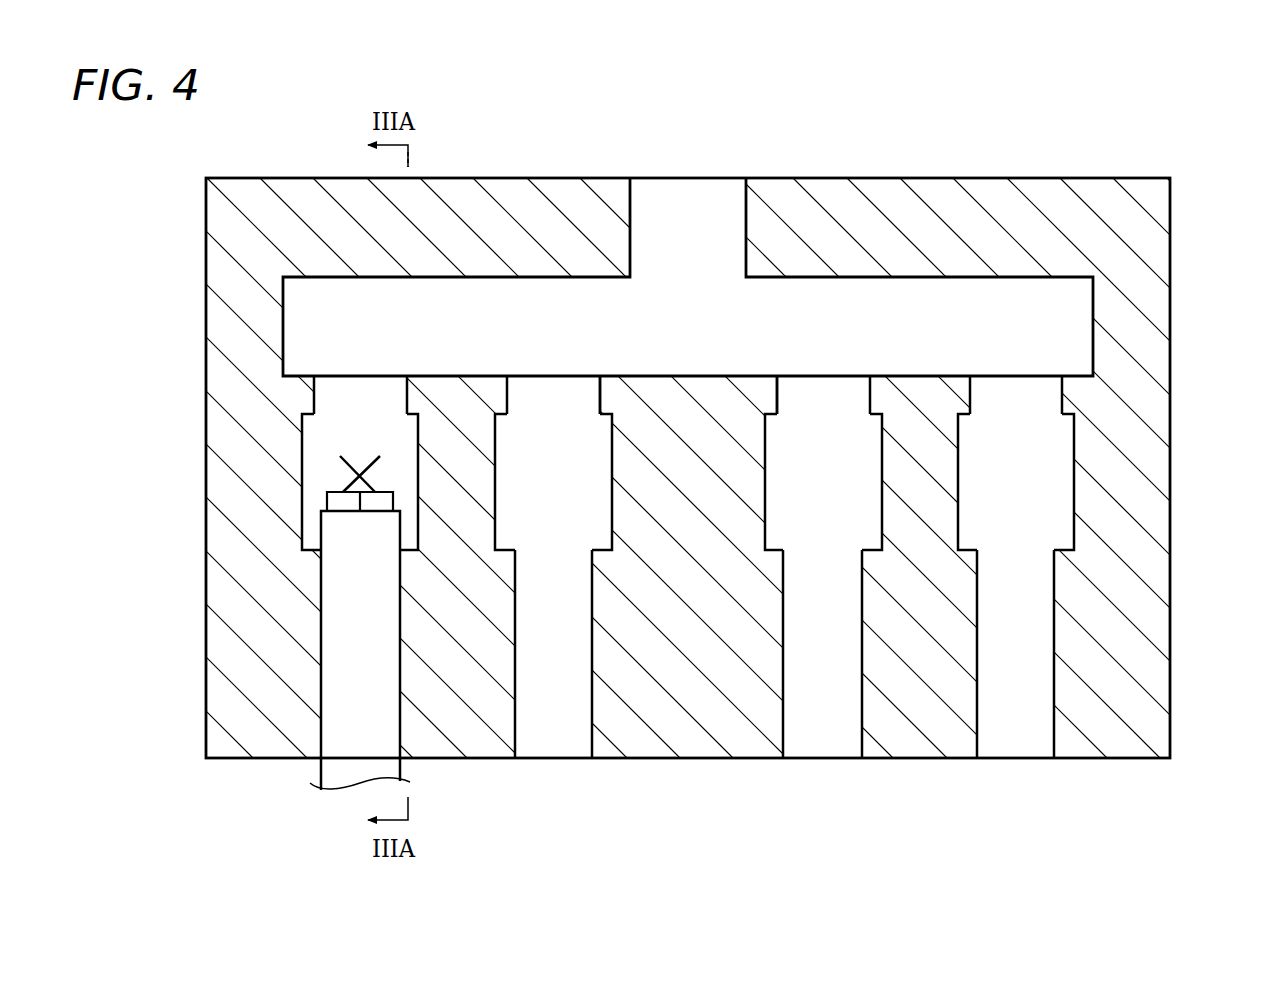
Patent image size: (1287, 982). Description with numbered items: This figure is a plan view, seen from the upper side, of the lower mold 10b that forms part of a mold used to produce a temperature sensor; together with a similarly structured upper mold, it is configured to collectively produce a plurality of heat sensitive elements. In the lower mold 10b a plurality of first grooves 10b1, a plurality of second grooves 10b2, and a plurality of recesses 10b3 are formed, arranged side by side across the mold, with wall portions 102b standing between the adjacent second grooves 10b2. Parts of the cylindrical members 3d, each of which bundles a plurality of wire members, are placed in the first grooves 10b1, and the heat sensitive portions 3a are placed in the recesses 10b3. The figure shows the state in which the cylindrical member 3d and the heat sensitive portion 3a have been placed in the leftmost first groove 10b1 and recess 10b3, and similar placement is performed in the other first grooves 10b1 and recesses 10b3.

The lower mold 10b is at (1130, 144).
The first groove 10b1 is at (322, 647).
The second groove 10b2 is at (330, 390).
The recess 10b3 is at (312, 525).
The wall portion 102b is at (601, 397).
The heat sensitive portion 3a is at (333, 472).
The cylindrical member 3d is at (383, 692).